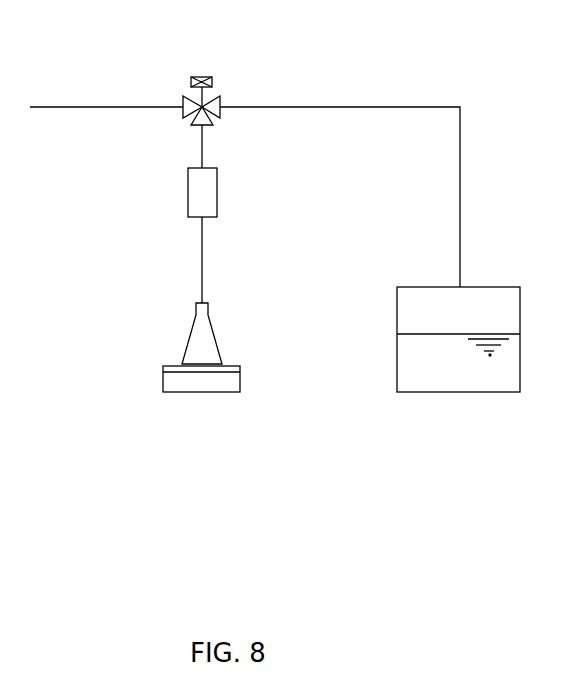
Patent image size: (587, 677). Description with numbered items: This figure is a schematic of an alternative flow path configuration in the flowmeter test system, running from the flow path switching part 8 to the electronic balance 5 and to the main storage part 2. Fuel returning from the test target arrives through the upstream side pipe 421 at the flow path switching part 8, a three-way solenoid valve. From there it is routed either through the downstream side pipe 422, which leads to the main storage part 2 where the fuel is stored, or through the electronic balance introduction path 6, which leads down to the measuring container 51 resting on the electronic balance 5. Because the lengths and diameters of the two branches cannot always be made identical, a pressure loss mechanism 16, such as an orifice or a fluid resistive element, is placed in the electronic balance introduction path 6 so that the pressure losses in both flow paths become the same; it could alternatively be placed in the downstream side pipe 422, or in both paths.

The upstream side pipe 421 is at (97, 105).
The downstream side pipe 422 is at (426, 104).
The flow path switching part 8 is at (201, 75).
The electronic balance introduction path 6 is at (202, 270).
The pressure loss mechanism 16 is at (188, 192).
The measuring container 51 is at (190, 340).
The electronic balance 5 is at (163, 381).
The main storage part 2 is at (520, 338).